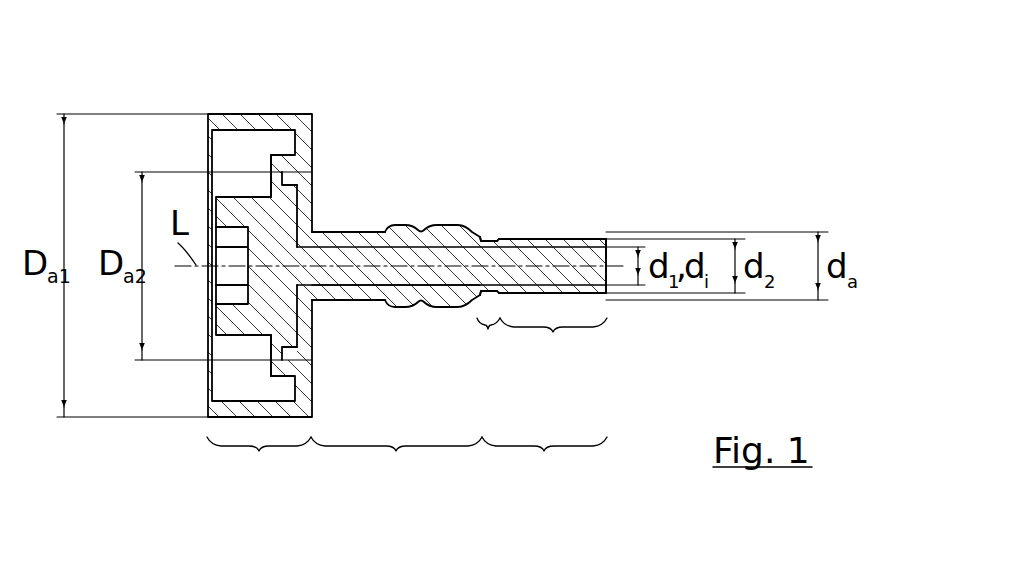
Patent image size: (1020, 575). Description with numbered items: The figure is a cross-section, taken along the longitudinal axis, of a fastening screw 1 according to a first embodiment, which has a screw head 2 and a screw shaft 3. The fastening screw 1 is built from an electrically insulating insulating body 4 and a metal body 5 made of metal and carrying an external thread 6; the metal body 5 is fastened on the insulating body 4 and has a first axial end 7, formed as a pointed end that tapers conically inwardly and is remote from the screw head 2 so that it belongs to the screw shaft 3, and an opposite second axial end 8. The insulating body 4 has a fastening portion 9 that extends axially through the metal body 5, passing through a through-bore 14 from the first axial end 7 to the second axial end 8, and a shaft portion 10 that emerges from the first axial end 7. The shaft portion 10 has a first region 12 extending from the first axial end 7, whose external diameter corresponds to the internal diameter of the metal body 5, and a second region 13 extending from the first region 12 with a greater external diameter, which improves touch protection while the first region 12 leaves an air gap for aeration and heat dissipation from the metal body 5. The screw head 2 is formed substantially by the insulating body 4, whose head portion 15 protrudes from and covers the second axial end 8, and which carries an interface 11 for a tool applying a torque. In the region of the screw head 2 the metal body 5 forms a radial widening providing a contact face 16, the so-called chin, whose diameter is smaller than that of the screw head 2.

The fastening screw 1 is at (74, 54).
The screw head 2 is at (253, 104).
The screw shaft 3 is at (458, 104).
The insulating body 4 is at (289, 113).
The metal body 5 is at (386, 306).
The external thread 6 is at (418, 216).
The first axial end 7 is at (494, 299).
The second axial end 8 is at (284, 186).
The fastening portion 9 is at (396, 465).
The shaft portion 10 is at (544, 466).
The interface 11 is at (206, 297).
The first region 12 is at (489, 307).
The second region 13 is at (553, 306).
The through-bore 14 is at (340, 290).
The head portion 15 is at (259, 465).
The contact face 16 is at (313, 183).